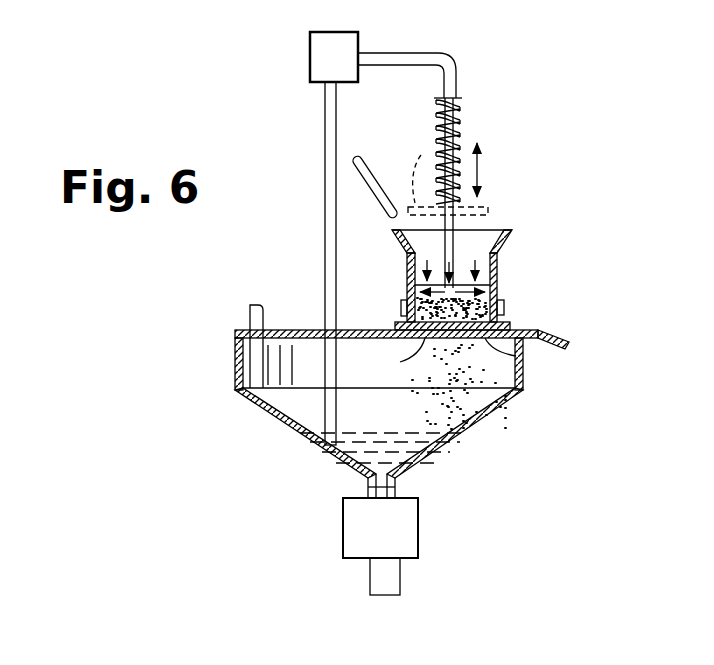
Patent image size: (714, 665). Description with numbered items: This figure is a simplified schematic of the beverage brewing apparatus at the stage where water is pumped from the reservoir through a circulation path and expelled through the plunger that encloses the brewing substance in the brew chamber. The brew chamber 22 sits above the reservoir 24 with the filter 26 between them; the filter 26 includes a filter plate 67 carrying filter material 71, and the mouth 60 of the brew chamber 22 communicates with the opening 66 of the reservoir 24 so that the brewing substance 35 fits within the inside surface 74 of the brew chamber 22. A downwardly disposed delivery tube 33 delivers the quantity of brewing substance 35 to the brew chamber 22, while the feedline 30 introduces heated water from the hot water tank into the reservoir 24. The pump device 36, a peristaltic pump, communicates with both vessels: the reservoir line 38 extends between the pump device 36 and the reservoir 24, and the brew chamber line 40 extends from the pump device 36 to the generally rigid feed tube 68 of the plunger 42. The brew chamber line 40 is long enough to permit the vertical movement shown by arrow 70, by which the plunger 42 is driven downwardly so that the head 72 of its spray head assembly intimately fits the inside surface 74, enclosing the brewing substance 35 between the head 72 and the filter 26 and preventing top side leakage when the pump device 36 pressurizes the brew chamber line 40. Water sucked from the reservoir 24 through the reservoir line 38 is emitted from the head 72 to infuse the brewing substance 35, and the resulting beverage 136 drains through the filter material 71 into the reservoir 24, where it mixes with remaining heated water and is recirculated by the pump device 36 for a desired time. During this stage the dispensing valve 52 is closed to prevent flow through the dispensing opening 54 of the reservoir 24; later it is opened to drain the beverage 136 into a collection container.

The pump device 36 is at (308, 50).
The brew chamber line 40 is at (403, 52).
The feed tube 68 is at (458, 136).
The arrow indicating vertical movement 70 is at (479, 170).
The plunger 42 is at (492, 199).
The delivery tube 33 is at (370, 168).
The head 72 is at (423, 155).
The inside surface 74 is at (492, 229).
The brew chamber 22 is at (506, 250).
The brewing substance 35 is at (504, 298).
The mouth 60 is at (504, 308).
The filter plate 67 is at (400, 326).
The filter 26 is at (560, 326).
The reservoir 24 is at (513, 405).
The dispensing opening 54 is at (396, 487).
The dispensing valve 52 is at (419, 538).
The reservoir line 38 is at (324, 208).
The feedline 30 is at (249, 318).
The filter material 71 is at (417, 353).
The opening 66 is at (512, 362).
The beverage 136 is at (455, 368).